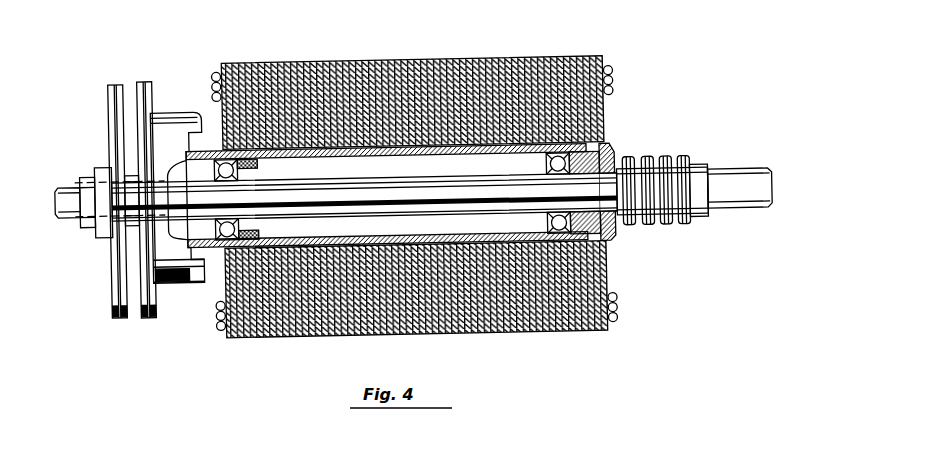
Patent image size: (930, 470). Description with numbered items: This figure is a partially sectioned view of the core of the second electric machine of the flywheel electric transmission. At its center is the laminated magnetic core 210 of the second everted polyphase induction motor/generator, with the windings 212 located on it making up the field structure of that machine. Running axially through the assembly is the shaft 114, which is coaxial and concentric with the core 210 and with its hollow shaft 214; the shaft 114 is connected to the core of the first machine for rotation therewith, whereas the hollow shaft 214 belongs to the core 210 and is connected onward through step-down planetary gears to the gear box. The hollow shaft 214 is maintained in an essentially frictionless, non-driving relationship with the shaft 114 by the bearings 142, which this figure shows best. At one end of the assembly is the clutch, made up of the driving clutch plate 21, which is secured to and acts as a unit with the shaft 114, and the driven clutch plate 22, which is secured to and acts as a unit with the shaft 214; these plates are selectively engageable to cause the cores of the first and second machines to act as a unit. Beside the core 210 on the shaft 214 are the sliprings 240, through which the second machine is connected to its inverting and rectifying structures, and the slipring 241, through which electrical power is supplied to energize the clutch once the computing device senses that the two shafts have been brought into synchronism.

The driving clutch plate 21 is at (111, 224).
The driven clutch plate 22 is at (160, 222).
The shaft 114 is at (364, 188).
The bearings 142 is at (410, 180).
The laminated magnetic core 210 is at (414, 178).
The windings 212 is at (451, 196).
The hollow shaft 214 is at (746, 167).
The sliprings 240 is at (679, 216).
The slipring 241 is at (642, 229).